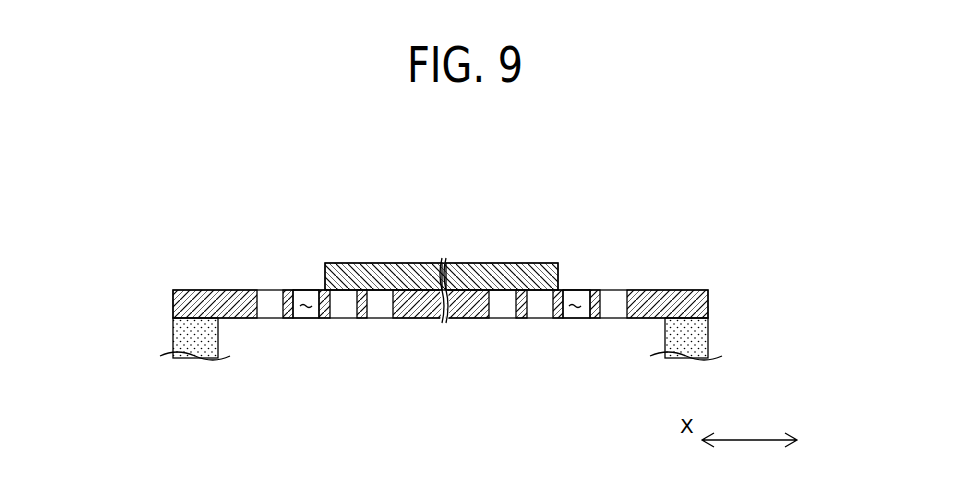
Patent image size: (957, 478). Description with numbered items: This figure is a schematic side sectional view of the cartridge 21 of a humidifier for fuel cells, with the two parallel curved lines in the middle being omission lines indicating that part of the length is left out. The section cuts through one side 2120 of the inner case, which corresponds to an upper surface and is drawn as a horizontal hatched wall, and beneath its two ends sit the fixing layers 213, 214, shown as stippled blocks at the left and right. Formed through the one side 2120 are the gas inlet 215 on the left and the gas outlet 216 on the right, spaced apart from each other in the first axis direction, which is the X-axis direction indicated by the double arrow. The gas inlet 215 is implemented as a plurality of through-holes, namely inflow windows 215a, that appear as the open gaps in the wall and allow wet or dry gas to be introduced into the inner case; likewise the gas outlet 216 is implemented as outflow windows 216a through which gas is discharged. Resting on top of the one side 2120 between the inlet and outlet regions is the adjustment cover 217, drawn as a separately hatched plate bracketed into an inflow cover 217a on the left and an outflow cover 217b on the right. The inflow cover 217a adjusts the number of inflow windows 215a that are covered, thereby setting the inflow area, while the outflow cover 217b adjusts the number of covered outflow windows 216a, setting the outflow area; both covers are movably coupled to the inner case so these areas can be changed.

The cartridge 21 is at (106, 170).
The one side of the inner case 2120 is at (482, 310).
The fixing layer 213 is at (190, 338).
The fixing layer 214 is at (693, 341).
The gas inlet 215 is at (306, 290).
The inflow window 215a is at (306, 310).
The gas outlet 216 is at (579, 290).
The outflow window 216a is at (574, 310).
The adjustment cover 217 is at (500, 175).
The inflow cover 217a is at (380, 263).
The outflow cover 217b is at (512, 263).